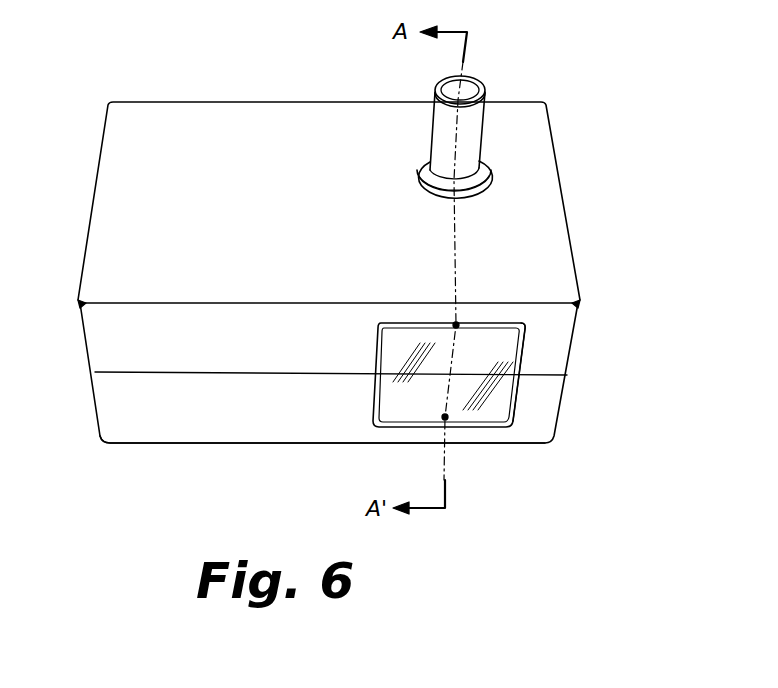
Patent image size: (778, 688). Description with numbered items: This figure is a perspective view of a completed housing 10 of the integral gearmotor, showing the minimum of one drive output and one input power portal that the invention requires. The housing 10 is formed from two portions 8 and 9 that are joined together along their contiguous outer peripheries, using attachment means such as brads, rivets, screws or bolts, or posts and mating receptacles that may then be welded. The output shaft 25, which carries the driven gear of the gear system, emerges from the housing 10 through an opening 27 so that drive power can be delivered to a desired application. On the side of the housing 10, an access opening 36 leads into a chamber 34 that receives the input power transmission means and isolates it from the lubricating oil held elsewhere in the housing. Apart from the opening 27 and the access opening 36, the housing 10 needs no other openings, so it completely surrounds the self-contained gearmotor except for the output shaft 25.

The housing portion 8 is at (83, 349).
The housing portion 9 is at (93, 407).
The housing 10 is at (592, 373).
The output shaft 25 is at (434, 93).
The opening 27 is at (478, 176).
The chamber 34 is at (486, 362).
The access opening 36 is at (521, 366).